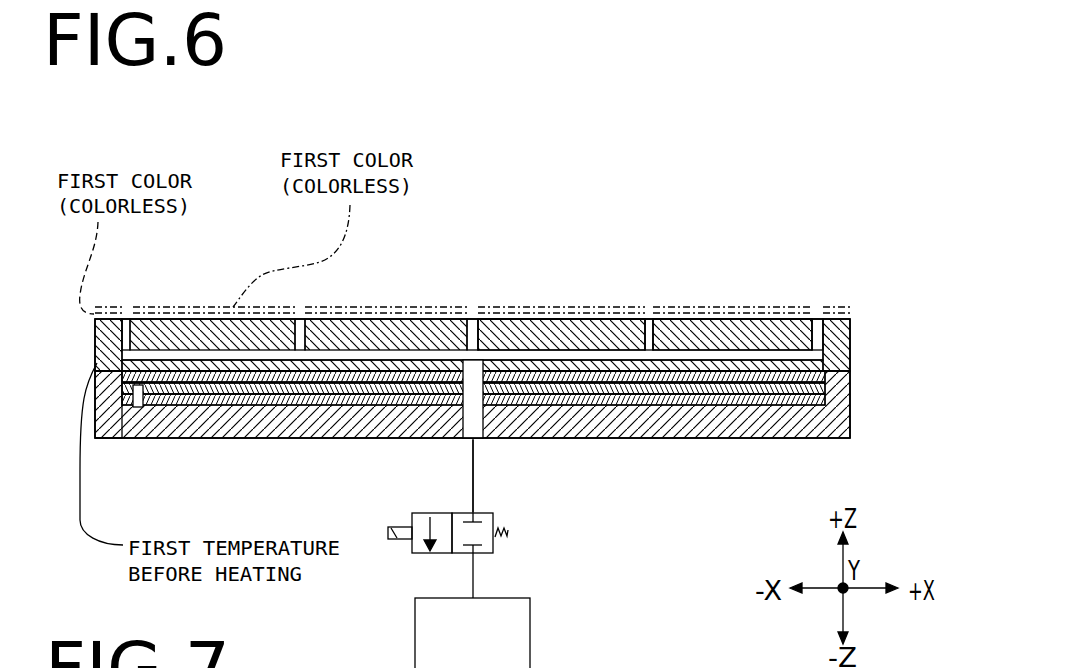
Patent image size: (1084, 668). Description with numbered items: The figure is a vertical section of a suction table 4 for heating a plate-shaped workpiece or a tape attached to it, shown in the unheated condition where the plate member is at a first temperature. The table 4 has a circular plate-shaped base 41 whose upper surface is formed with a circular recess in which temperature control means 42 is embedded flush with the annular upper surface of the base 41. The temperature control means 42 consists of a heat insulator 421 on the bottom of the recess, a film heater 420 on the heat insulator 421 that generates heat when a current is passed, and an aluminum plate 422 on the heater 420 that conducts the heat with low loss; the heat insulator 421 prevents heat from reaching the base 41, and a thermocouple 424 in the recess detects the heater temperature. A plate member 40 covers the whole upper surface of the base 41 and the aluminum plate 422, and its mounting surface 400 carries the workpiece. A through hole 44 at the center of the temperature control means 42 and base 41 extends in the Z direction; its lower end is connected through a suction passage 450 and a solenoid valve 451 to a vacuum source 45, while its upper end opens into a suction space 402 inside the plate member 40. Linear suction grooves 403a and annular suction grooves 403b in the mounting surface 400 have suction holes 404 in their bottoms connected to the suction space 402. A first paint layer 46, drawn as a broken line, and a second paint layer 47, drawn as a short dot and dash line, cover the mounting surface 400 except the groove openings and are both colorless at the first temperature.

The table 4 is at (868, 254).
The plate member 40 is at (840, 333).
The base 41 is at (842, 420).
The temperature control means 42 is at (123, 410).
The through hole 44 is at (475, 417).
The vacuum source 45 is at (530, 623).
The first paint layer 46 is at (855, 313).
The second paint layer 47 is at (680, 306).
The mounting surface 400 is at (355, 318).
The suction space 402 is at (735, 342).
The linear suction grooves 403a is at (471, 318).
The annular suction grooves 403b is at (126, 318).
The suction holes 404 is at (818, 345).
The heater 420 is at (666, 392).
The heat insulator 421 is at (742, 396).
The aluminum plate 422 is at (822, 376).
The thermocouple 424 is at (140, 407).
The suction passage 450 is at (473, 466).
The solenoid valve 451 is at (487, 540).